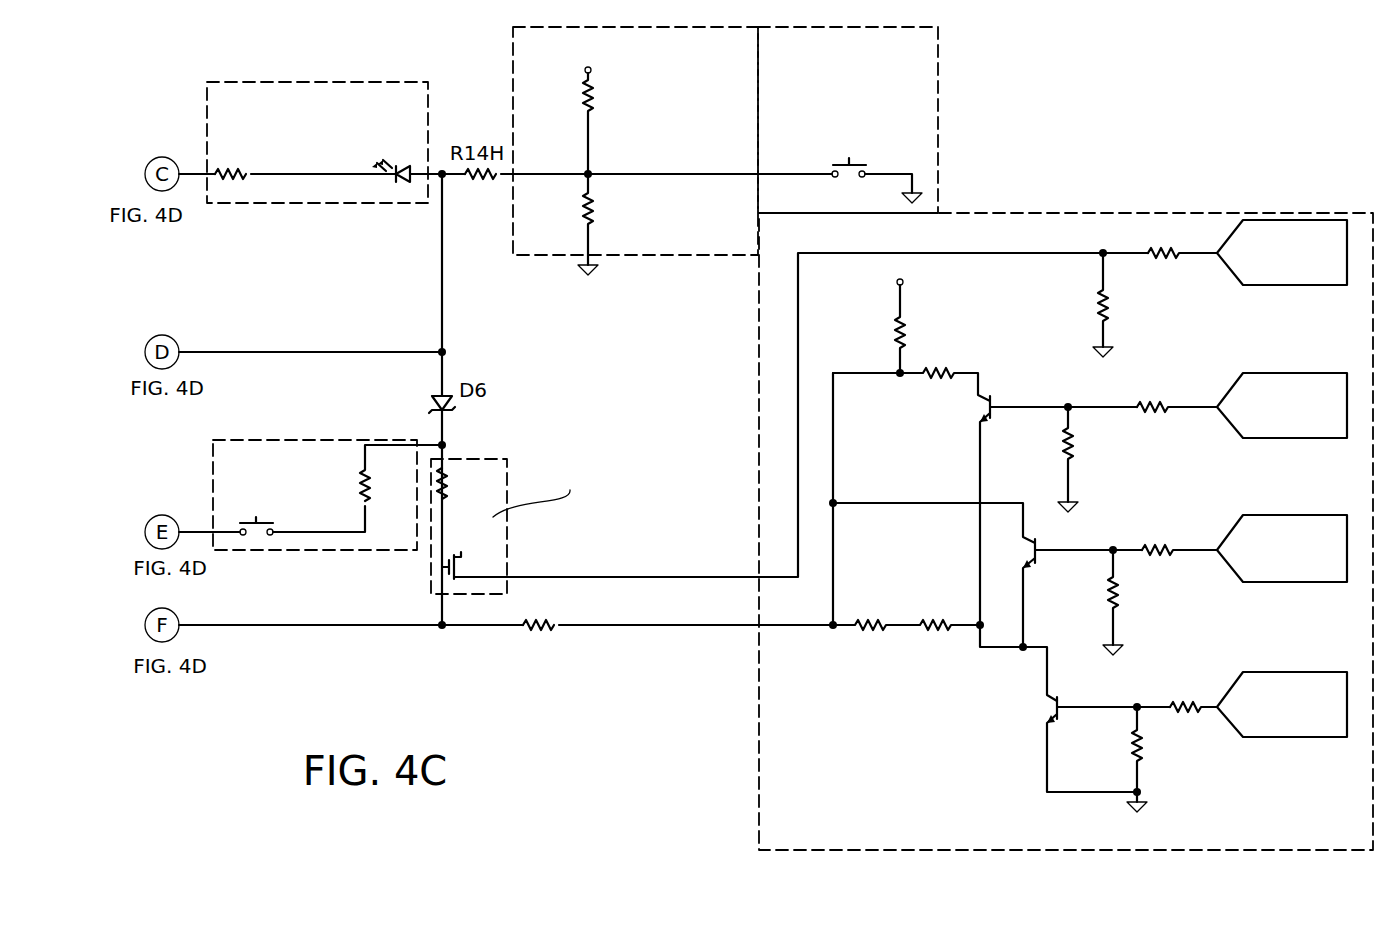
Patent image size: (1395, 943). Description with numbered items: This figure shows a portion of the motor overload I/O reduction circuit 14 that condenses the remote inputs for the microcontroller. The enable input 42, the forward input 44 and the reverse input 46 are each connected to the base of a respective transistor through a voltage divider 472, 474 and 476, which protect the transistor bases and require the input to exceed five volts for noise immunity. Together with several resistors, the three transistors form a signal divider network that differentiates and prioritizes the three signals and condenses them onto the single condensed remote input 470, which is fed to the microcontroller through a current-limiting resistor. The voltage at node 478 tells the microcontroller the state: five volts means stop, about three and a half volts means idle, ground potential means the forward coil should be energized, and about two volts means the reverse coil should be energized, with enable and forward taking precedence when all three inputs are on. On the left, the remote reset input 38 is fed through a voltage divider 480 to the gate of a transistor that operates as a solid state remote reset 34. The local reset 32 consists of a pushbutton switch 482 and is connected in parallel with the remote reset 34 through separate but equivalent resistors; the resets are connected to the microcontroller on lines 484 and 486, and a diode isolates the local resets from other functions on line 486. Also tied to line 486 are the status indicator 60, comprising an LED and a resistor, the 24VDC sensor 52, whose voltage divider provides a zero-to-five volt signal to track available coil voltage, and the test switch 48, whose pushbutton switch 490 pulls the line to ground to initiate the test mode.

The motor overload I/O reduction circuit 14 is at (1030, 531).
The local reset 32 is at (327, 493).
The solid state remote reset 34 is at (508, 542).
The remote reset input 38 is at (1272, 286).
The enable input 42 is at (1270, 738).
The forward input 44 is at (1272, 583).
The reverse input 46 is at (1320, 438).
The test switch 48 is at (848, 106).
The 24VDC sensor 52 is at (706, 27).
The status indicator 60 is at (370, 82).
The condensed remote input 470 is at (597, 628).
The voltage divider 472 is at (1205, 732).
The voltage divider 474 is at (1182, 587).
The voltage divider 476 is at (1145, 433).
The node 478 is at (833, 628).
The voltage divider 480 is at (1147, 268).
The pushbutton switch 482 is at (254, 527).
The line 484 is at (197, 530).
The line 486 is at (213, 352).
The pushbutton switch 490 is at (848, 160).